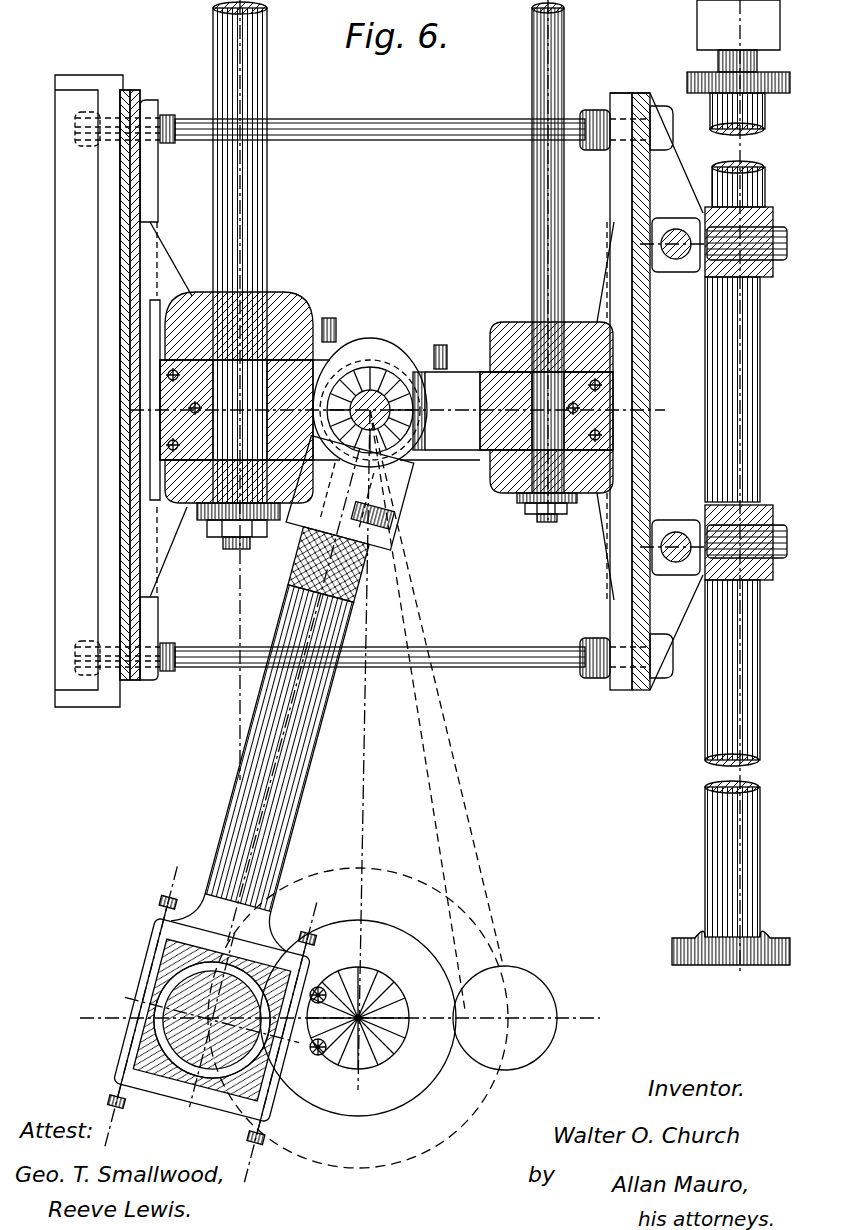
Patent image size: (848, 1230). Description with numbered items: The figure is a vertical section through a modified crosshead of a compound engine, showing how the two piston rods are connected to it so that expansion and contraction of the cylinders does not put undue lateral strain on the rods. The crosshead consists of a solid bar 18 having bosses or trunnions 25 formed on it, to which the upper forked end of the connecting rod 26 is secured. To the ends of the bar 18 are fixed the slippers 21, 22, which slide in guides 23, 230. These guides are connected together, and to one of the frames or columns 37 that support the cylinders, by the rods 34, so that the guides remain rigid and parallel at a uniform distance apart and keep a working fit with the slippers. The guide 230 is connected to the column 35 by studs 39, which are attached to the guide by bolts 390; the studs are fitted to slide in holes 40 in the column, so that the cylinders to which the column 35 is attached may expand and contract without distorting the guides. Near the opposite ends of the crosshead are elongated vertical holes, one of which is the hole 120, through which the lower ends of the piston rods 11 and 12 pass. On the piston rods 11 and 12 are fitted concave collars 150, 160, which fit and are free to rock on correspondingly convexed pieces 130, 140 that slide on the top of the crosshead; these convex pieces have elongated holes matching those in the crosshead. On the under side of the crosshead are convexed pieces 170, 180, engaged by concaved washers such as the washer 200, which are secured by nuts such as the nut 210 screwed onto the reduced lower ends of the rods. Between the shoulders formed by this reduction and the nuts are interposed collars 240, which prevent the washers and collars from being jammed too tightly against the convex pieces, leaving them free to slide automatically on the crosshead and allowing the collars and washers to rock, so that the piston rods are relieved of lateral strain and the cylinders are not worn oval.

The piston rod 11 is at (532, 163).
The piston rod 12 is at (267, 176).
The solid bar 18 is at (455, 365).
The slipper 21 is at (130, 550).
The slipper 22 is at (616, 540).
The guide 23 is at (150, 207).
The bosses or trunnions 25 is at (396, 393).
The connecting rod 26 is at (410, 510).
The rods 34 is at (383, 140).
The column 35 is at (739, 487).
The frame or column 37 is at (89, 391).
The studs 39 is at (780, 230).
The holes 40 is at (770, 262).
The elongated vertical hole 120 is at (160, 372).
The convexed piece 130 is at (290, 308).
The convexed piece 140 is at (515, 322).
The concave collar 150 is at (242, 377).
The concave collar 160 is at (542, 376).
The convexed piece 170 is at (275, 512).
The convexed piece 180 is at (520, 496).
The concaved washer 200 is at (415, 462).
The nut 210 is at (236, 548).
The guide 230 is at (612, 172).
The collars 240 is at (222, 530).
The bolts 390 is at (676, 232).